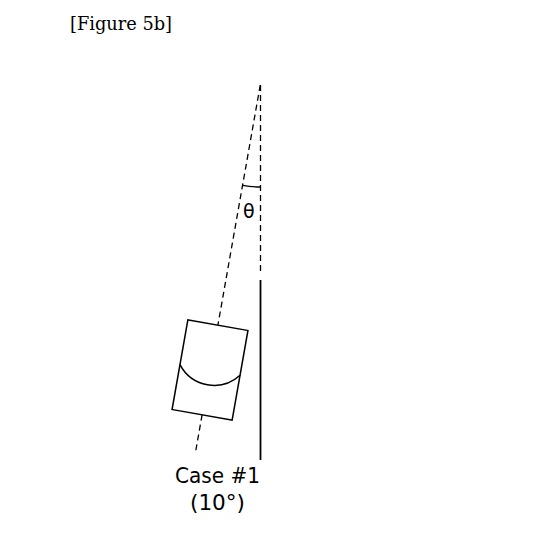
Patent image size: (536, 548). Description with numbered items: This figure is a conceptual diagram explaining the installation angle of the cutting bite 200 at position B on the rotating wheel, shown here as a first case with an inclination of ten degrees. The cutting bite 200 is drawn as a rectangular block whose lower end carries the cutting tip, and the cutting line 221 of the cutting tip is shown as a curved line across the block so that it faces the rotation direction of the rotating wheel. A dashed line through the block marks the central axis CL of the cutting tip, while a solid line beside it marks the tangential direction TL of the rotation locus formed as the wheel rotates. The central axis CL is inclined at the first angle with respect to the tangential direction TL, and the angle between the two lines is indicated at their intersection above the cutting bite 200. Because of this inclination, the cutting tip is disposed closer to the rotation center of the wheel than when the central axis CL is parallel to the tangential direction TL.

The cutting bite 200 is at (180, 317).
The cutting line 221 is at (197, 382).
The central axis CL is at (219, 309).
The tangential direction TL is at (262, 310).